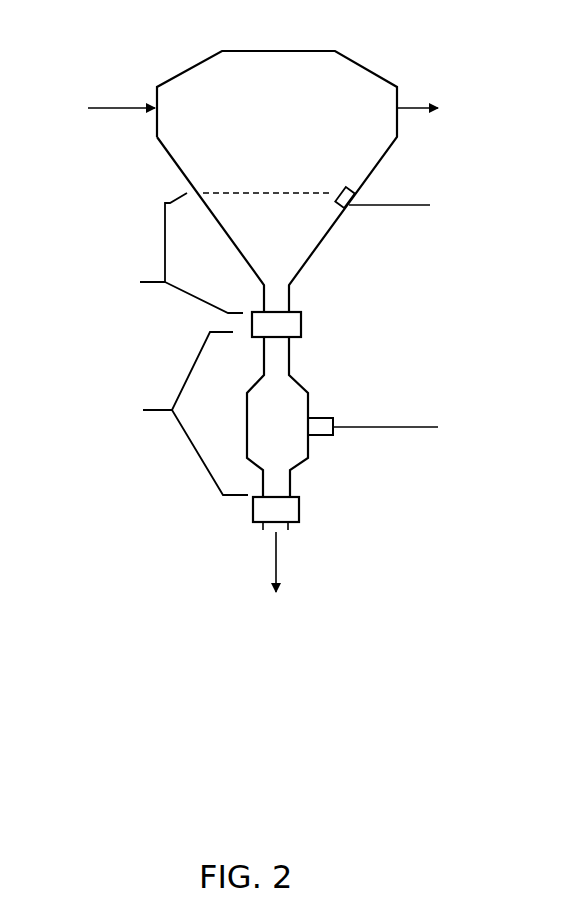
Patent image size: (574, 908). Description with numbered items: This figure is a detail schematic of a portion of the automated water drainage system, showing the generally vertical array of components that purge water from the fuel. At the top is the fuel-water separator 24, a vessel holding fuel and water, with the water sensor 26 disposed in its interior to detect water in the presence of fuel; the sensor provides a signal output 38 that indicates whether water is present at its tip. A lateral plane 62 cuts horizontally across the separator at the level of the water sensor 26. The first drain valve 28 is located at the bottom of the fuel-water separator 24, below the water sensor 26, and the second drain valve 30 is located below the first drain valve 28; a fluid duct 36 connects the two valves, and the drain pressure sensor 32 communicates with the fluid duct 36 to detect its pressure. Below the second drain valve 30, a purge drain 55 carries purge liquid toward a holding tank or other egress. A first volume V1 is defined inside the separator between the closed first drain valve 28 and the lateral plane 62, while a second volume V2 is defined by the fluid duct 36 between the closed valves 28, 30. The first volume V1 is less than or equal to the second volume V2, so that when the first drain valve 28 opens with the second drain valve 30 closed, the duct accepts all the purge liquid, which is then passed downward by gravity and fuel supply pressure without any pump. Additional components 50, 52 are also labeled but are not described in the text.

The fuel-water separator 24 is at (303, 50).
The feed inlet stream 50 is at (106, 108).
The outlet stream 52 is at (431, 108).
The lateral plane 62 is at (257, 193).
The water sensor 26 is at (348, 208).
The signal output 38 is at (423, 207).
The first drain valve 28 is at (303, 322).
The fluid duct 36 is at (293, 368).
The drain pressure sensor 32 is at (333, 418).
The second drain valve 30 is at (300, 510).
The purge drain 55 is at (276, 575).
The first volume V1 is at (173, 253).
The second volume V2 is at (176, 413).